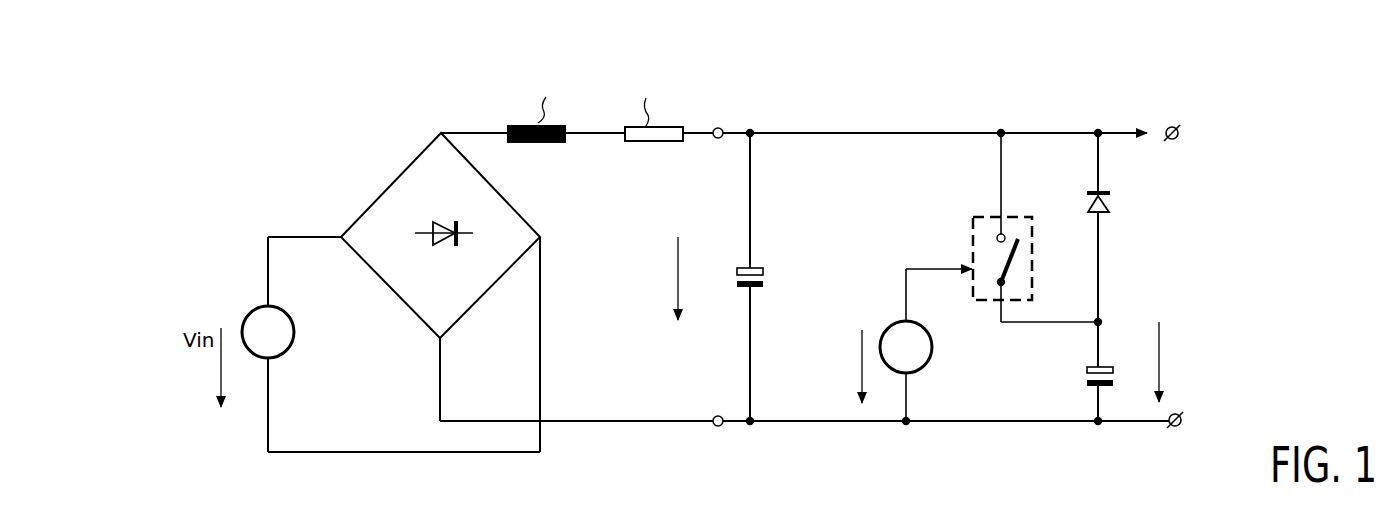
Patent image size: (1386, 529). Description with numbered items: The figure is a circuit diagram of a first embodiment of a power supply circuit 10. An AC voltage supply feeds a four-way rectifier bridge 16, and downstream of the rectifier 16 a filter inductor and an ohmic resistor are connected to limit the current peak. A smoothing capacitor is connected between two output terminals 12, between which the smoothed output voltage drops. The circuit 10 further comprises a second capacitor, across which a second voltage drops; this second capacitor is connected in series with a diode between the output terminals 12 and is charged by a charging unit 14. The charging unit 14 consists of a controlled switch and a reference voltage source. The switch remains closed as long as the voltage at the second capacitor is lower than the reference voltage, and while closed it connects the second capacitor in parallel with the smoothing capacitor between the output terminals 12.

The power supply circuit 10 is at (992, 106).
The output terminals 12 is at (1179, 131).
The charging unit 14 is at (1055, 432).
The four-way rectifier bridge 16 is at (441, 130).